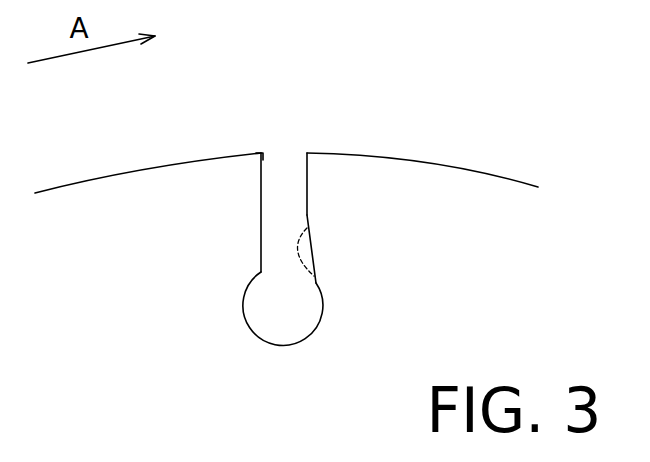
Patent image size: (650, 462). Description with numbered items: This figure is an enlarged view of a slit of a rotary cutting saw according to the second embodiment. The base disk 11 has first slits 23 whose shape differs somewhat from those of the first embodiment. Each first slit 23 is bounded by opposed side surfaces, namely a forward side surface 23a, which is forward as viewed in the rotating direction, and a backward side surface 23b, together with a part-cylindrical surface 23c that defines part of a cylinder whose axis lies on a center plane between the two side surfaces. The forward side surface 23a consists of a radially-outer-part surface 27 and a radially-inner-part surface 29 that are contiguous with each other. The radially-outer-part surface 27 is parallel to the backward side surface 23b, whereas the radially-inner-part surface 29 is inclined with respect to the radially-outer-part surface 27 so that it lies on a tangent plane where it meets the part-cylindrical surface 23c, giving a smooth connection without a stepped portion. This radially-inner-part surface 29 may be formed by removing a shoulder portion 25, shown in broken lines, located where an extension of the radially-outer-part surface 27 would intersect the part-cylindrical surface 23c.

The base disk 11 is at (97, 195).
The first slit 23 is at (283, 155).
The forward side surface 23a is at (457, 229).
The backward side surface 23b is at (262, 177).
The part-cylindrical surface 23c is at (258, 333).
The shoulder portion 25 is at (310, 228).
The radially-outer-part surface 27 is at (307, 167).
The radially-inner-part surface 29 is at (316, 258).